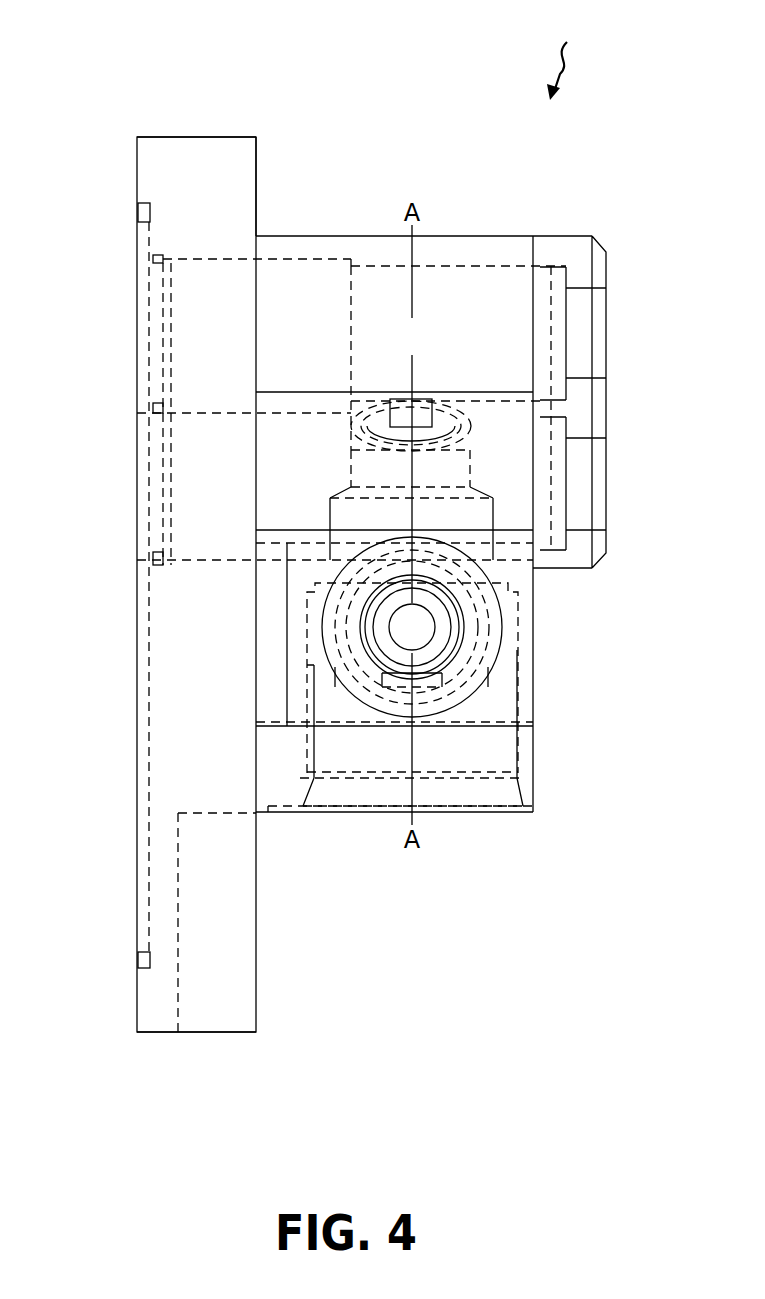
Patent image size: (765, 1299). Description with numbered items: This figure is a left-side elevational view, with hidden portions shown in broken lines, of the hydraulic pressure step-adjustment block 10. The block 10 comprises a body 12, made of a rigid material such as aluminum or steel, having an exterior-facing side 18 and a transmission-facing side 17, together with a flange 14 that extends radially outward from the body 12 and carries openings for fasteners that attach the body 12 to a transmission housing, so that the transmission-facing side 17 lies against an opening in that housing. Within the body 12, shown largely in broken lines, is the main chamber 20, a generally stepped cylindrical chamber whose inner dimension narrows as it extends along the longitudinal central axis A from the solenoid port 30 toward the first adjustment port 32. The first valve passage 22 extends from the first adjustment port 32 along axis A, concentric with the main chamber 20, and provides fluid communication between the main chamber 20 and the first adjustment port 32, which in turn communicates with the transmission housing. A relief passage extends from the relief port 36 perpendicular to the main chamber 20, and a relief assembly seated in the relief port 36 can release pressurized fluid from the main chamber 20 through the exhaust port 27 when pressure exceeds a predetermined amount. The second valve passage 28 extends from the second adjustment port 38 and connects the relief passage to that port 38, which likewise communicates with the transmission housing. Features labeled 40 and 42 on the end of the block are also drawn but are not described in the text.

The hydraulic pressure step-adjustment block 10 is at (570, 54).
The body 12 is at (258, 128).
The flange 14 is at (158, 137).
The transmission-facing side 17 is at (138, 982).
The exterior-facing side 18 is at (256, 188).
The main chamber 20 is at (515, 678).
The first valve passage 22 is at (455, 425).
The exhaust port 27 is at (443, 695).
The second valve passage 28 is at (430, 553).
The solenoid port 30 is at (508, 792).
The first adjustment port 32 is at (200, 262).
The relief port 36 is at (350, 692).
The second adjustment port 38 is at (178, 560).
The end cap 40 is at (607, 262).
The groove 42 is at (575, 287).